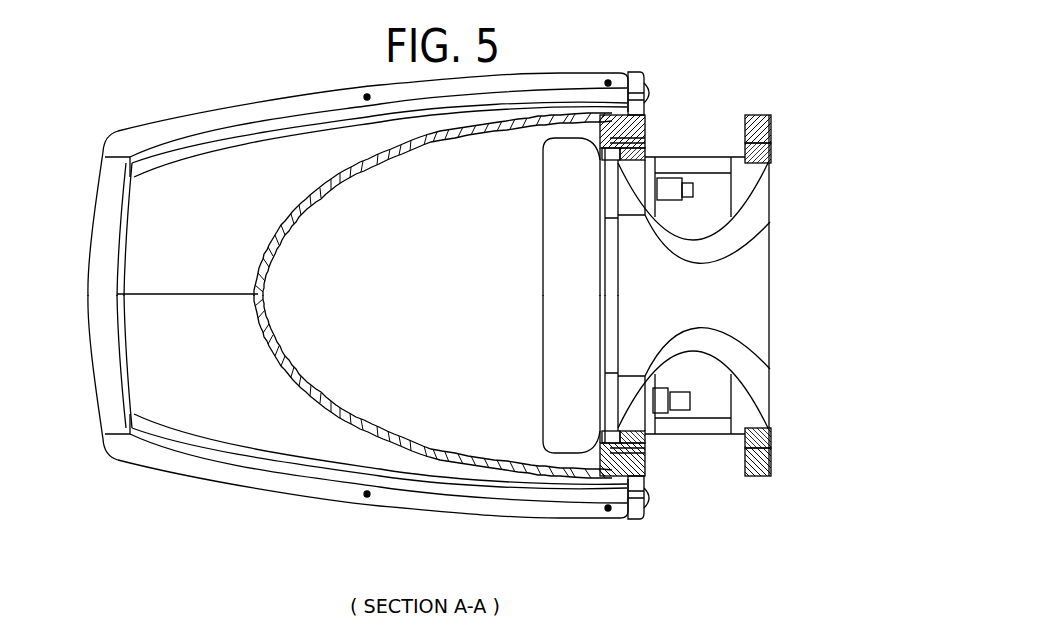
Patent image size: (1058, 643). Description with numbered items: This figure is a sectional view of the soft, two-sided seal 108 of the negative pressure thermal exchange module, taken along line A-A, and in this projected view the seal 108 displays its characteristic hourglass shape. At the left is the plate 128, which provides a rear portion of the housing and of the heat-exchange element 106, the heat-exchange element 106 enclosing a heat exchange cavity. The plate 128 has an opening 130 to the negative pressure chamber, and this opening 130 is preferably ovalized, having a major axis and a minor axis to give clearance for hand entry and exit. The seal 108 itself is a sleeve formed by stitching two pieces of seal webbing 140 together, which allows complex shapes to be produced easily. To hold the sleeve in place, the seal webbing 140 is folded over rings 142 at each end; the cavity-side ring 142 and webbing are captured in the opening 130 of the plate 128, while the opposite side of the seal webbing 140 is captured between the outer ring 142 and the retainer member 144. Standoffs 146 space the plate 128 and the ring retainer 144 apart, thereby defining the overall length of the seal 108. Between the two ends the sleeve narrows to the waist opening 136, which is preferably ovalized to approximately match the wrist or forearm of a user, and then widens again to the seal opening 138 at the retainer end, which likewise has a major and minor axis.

The heat-exchange element 106 is at (298, 445).
The seal 108 is at (694, 368).
The plate 128 is at (645, 70).
The opening 130 is at (622, 189).
The waist opening 136 is at (709, 252).
The seal opening 138 is at (775, 190).
The seal webbing 140 is at (730, 436).
The rings 142 is at (645, 147).
The retainer member 144 is at (765, 470).
The standoffs 146 is at (682, 157).